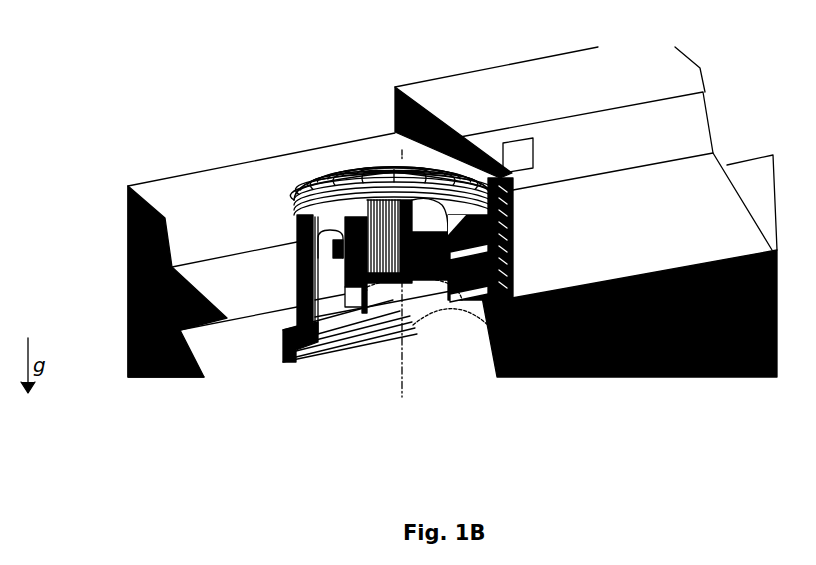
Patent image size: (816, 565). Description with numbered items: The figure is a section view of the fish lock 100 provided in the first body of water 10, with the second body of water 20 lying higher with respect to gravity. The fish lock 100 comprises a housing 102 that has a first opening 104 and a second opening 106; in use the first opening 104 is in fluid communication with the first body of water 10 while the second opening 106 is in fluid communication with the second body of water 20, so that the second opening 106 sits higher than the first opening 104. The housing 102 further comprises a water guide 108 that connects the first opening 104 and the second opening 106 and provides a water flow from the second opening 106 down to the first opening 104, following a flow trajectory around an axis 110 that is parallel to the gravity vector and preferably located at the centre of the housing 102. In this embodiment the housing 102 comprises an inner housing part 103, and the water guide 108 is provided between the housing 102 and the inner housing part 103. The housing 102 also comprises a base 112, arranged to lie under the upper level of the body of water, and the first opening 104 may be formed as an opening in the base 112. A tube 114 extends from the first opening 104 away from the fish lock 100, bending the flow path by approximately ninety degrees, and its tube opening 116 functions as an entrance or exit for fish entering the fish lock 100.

The first body of water 10 is at (228, 300).
The second body of water 20 is at (682, 133).
The fish lock 100 is at (340, 167).
The housing 102 is at (295, 243).
The inner housing part 103 is at (378, 223).
The first opening 104 is at (422, 290).
The second opening 106 is at (513, 243).
The water guide 108 is at (320, 282).
The axis 110 is at (403, 360).
The base 112 is at (443, 273).
The tube 114 is at (293, 345).
The tube opening 116 is at (282, 348).